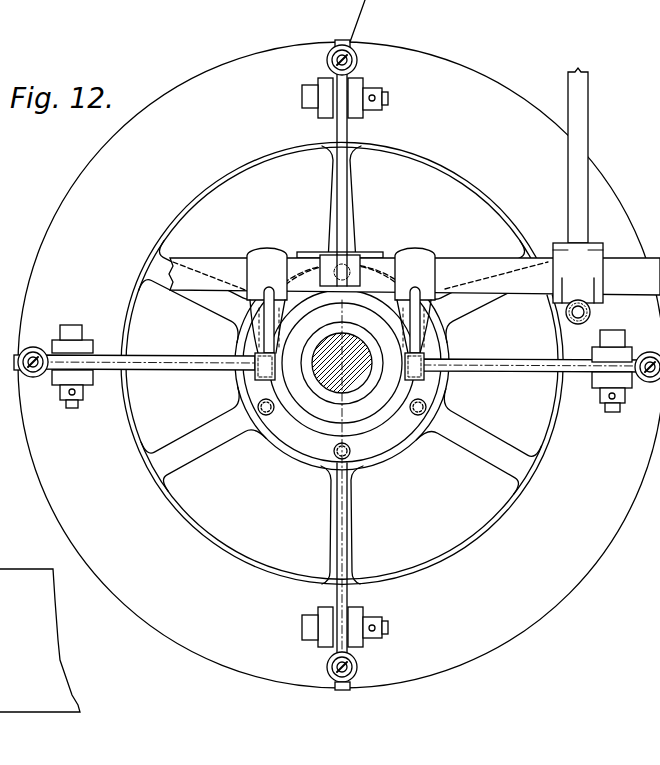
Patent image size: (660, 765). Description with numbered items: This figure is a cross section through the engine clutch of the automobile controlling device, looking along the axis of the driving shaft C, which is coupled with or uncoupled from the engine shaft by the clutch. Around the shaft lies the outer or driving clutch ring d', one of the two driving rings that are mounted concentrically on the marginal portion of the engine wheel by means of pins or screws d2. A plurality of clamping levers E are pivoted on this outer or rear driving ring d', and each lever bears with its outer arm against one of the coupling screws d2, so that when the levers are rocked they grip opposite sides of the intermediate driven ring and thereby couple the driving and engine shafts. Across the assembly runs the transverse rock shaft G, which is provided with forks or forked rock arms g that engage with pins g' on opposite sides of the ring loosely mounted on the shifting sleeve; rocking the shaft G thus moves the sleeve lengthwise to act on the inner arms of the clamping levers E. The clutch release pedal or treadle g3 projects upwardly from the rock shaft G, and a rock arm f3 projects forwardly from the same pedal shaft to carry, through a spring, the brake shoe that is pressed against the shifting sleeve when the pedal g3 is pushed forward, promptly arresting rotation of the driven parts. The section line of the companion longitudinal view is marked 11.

The outer driving clutch ring d' is at (339, 365).
The driving shaft C is at (496, 498).
The shaft c is at (355, 383).
The clamping levers E is at (333, 176).
The tie rod 11 is at (341, 487).
The transverse rock shaft G is at (628, 268).
The forked rock arms g is at (336, 300).
The pins g' is at (346, 368).
The rock arm f3 is at (357, 252).
The clutch release pedal g3 is at (571, 74).
The pins or screws d2 is at (377, 690).